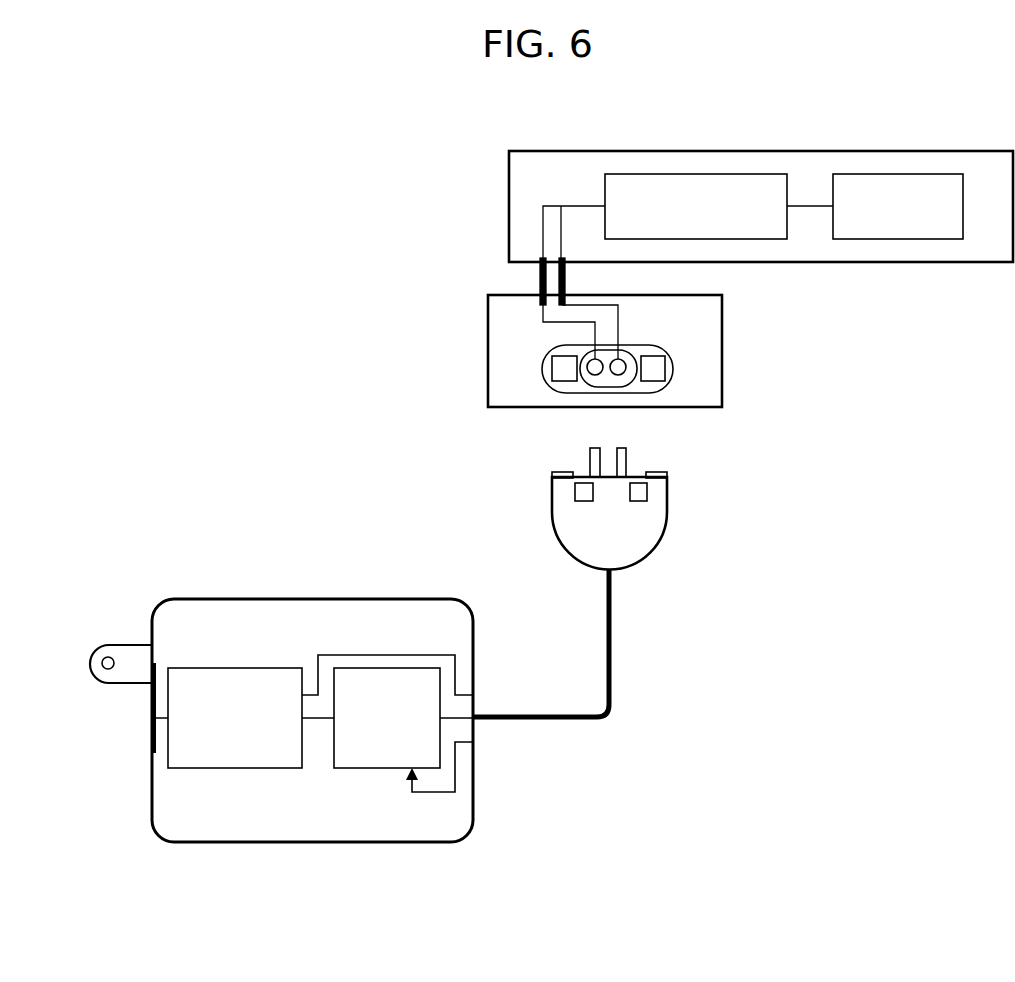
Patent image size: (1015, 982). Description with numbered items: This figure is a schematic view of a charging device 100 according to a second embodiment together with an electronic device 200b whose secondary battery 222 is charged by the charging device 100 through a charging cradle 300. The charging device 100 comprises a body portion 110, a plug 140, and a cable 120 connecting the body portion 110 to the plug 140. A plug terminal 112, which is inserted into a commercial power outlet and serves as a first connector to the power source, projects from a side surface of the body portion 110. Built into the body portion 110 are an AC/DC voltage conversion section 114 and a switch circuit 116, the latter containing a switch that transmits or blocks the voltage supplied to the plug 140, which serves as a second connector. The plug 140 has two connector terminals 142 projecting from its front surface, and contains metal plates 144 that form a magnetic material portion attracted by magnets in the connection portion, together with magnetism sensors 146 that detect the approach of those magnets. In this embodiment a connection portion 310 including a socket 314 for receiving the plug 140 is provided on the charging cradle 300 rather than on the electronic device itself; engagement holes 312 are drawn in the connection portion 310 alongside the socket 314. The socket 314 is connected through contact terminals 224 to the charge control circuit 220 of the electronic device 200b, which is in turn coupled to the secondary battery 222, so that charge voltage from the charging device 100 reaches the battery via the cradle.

The charging device 100 is at (620, 817).
The body portion 110 is at (281, 709).
The plug terminal 112 is at (118, 685).
The AC/DC voltage conversion section 114 is at (234, 768).
The switch circuit 116 is at (375, 768).
The cable 120 is at (612, 707).
The plug 140 is at (607, 512).
The connector terminals 142 is at (590, 455).
The metal plates 144 is at (551, 474).
The magnetism sensors 146 is at (578, 490).
The electronic device 200b is at (730, 183).
The charge control circuit 220 is at (686, 174).
The secondary battery 222 is at (893, 174).
The contact terminals 224 is at (539, 280).
The charging cradle 300 is at (622, 334).
The connection portion 310 is at (602, 327).
The engagement holes 312 is at (553, 368).
The socket 314 is at (628, 355).